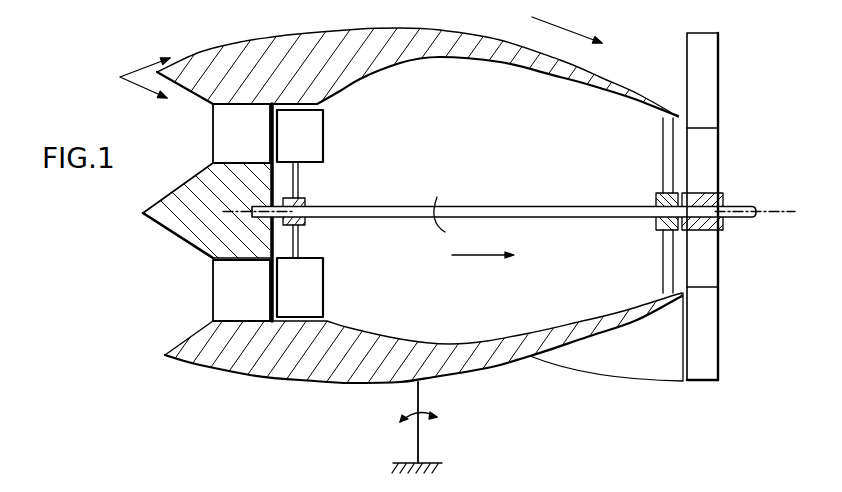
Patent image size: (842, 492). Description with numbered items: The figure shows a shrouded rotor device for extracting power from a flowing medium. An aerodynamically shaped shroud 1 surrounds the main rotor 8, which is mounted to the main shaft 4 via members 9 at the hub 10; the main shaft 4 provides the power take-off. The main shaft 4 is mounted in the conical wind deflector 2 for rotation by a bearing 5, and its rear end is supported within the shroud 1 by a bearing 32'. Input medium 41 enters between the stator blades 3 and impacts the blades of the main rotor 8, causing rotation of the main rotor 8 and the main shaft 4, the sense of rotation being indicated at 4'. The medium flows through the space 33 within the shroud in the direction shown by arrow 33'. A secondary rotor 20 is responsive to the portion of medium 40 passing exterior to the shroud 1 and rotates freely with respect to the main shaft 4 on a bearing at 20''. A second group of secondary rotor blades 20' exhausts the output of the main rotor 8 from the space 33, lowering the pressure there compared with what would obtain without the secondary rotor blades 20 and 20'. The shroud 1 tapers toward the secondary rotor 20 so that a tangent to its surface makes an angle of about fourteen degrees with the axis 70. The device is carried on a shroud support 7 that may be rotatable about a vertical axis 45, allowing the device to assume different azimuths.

The shroud 1 is at (228, 46).
The conical wind deflector 2 is at (178, 228).
The stator blades 3 is at (224, 136).
The main shaft 4 is at (504, 228).
The shaft rotation direction 4' is at (426, 205).
The bearing 5 is at (260, 205).
The shroud support 7 is at (420, 403).
The main rotor 8 is at (308, 140).
The members 9 is at (299, 183).
The hub 10 is at (306, 201).
The secondary rotor 20 is at (721, 206).
The secondary rotor blades 20' is at (721, 216).
The bearing 20'' is at (721, 200).
The bearing 32' is at (659, 201).
The space 33 is at (553, 205).
The arrow 33' is at (483, 268).
The medium 40 is at (578, 16).
The input medium 41 is at (120, 77).
The vertical axis 45 is at (419, 450).
The axis 70 is at (233, 212).